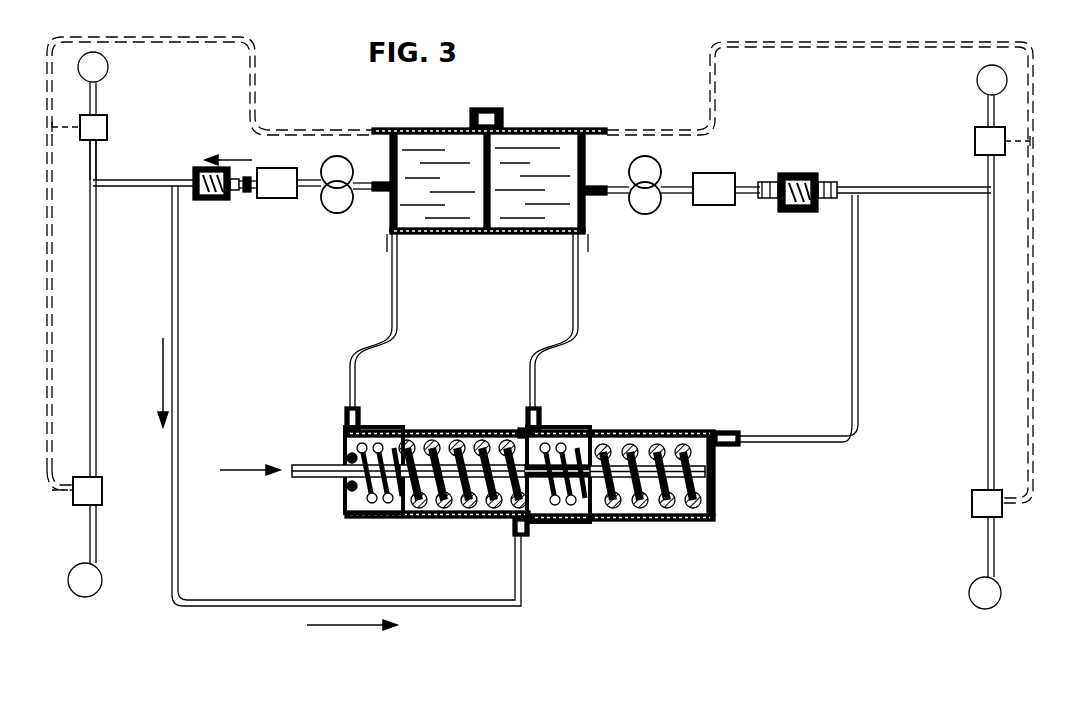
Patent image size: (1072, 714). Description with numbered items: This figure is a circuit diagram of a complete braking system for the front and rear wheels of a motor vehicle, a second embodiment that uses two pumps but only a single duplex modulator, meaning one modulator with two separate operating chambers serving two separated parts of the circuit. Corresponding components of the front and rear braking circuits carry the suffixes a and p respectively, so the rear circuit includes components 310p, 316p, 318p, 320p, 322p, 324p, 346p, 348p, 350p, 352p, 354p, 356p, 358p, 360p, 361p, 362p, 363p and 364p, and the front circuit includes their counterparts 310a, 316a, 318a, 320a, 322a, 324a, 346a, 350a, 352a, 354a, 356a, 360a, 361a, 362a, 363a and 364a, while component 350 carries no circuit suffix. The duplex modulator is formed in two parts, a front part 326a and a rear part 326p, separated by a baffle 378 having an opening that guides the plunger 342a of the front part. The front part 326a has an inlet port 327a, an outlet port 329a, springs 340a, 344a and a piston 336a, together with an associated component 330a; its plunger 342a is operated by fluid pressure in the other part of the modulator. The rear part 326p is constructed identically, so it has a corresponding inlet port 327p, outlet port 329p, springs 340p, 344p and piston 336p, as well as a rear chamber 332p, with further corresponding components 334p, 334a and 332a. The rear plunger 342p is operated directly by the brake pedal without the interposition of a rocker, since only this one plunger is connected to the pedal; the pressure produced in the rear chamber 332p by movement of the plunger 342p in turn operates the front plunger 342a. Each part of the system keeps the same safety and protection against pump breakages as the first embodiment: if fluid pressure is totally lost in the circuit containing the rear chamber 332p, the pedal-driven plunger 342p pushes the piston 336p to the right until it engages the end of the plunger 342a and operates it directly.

The fuel tank 350 is at (525, 135).
The baffle 378 is at (520, 428).
The pump (pilot side) 310p is at (337, 156).
The pump (auxiliary side) 310a is at (645, 156).
The pump inlet line 316p is at (310, 187).
The pump inlet line 316a is at (672, 194).
The regulator 318p is at (278, 168).
The regulator 318a is at (716, 173).
The connector line 320p is at (246, 192).
The connector line 320a is at (748, 194).
The filter 322p is at (213, 201).
The filter 322a is at (798, 173).
The return conduit 324p is at (179, 383).
The return conduit 324a is at (851, 318).
The rear part of the modulator valve 326p is at (480, 430).
The front part of the modulator valve 326a is at (665, 430).
The outlet fitting 327p is at (518, 536).
The inlet port 327a is at (735, 432).
The inlet fitting 329p is at (345, 420).
The outlet port 329a is at (542, 420).
The housing end wall 330a is at (716, 490).
The helical spring 332p is at (450, 525).
The helical spring 332a is at (665, 505).
The inner spring 334p is at (390, 500).
The inner spring 334a is at (600, 445).
The piston 336p is at (355, 516).
The piston 336a is at (545, 524).
The shaft 340p is at (470, 500).
The spring 340a is at (672, 500).
The plunger 342p is at (308, 478).
The plunger 342a is at (550, 510).
The supply conduit 344p is at (375, 440).
The spring 344a is at (558, 440).
The supply line 346p is at (130, 187).
The supply line 346a is at (930, 195).
The line 348p is at (97, 160).
The line 350p is at (97, 285).
The line 350a is at (988, 343).
The valve 352p is at (107, 127).
The valve 352a is at (975, 140).
The valve 354p is at (102, 488).
The valve 354a is at (972, 500).
The control connection 356p is at (70, 133).
The control connection 356a is at (1018, 146).
The control connection 358p is at (62, 495).
The control enclosure 360p is at (253, 102).
The control enclosure 360a is at (820, 272).
The line 361p is at (97, 98).
The line 361a is at (988, 108).
The accumulator 362p is at (108, 67).
The accumulator 362a is at (977, 80).
The line 363p is at (89, 560).
The line 363a is at (988, 560).
The accumulator 364p is at (72, 586).
The accumulator 364a is at (997, 588).